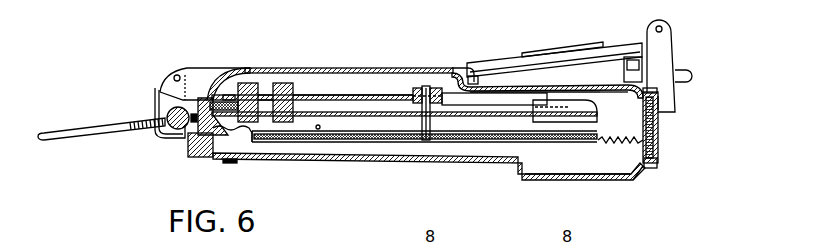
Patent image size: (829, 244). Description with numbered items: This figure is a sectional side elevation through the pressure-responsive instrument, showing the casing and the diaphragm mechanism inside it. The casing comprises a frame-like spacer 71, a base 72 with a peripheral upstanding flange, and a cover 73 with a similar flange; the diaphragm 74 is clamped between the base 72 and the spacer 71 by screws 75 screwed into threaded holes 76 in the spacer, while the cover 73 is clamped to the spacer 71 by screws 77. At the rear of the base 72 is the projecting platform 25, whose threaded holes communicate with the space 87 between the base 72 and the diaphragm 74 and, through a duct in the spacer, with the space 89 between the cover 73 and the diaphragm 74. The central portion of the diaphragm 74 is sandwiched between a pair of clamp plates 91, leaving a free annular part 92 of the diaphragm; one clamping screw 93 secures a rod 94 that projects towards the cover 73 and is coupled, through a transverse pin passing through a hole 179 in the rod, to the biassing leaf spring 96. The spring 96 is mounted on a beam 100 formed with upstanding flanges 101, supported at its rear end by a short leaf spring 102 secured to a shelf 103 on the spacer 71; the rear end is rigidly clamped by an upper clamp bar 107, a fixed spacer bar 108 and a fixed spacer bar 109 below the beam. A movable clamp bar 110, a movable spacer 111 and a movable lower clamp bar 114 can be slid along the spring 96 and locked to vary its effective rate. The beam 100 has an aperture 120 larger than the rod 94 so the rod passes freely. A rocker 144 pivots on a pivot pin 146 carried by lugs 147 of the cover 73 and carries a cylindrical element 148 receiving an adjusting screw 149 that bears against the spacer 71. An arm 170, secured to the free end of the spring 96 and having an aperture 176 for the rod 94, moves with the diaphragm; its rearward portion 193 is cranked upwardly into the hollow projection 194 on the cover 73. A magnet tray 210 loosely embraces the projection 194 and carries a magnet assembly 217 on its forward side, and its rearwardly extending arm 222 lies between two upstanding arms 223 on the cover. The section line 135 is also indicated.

The projecting platform 25 is at (588, 183).
The spacer 71 is at (660, 122).
The base 72 is at (638, 168).
The cover 73 is at (660, 103).
The diaphragm 74 is at (572, 140).
The screws 75 is at (660, 167).
The threaded holes 76 is at (658, 138).
The screws 77 is at (658, 88).
The space 87 is at (543, 168).
The space 89 is at (607, 130).
The clamp plates 91 is at (318, 129).
The annular part 92 is at (240, 150).
The screw 93 is at (427, 137).
The rod 94 is at (437, 123).
The biassing leaf spring 96 is at (350, 92).
The beam 100 is at (370, 110).
The upstanding flanges 101 is at (578, 117).
The short leaf spring 102 is at (195, 133).
The shelf 103 is at (215, 155).
The upper clamp bar 107 is at (255, 78).
The fixed spacer bar 108 is at (267, 90).
The fixed spacer bar 109 is at (255, 142).
The movable clamp bar 110 is at (290, 83).
The movable spacer 111 is at (315, 85).
The movable lower clamp bar 114 is at (292, 142).
The aperture 120 is at (413, 123).
The section line 135 is at (497, 243).
The rocker 144 is at (153, 90).
The pivot pin 146 is at (175, 75).
The lugs 147 is at (197, 67).
The element 148 is at (165, 110).
The adjusting screw 149 is at (62, 125).
The arm 170 is at (450, 72).
The aperture 176 is at (433, 88).
The hole 179 is at (427, 90).
The rearward portion 193 is at (578, 93).
The hollow projection 194 is at (587, 40).
The magnet tray 210 is at (495, 62).
The magnet assembly 217 is at (630, 62).
The arm 222 is at (690, 72).
The upstanding arms 223 is at (672, 32).